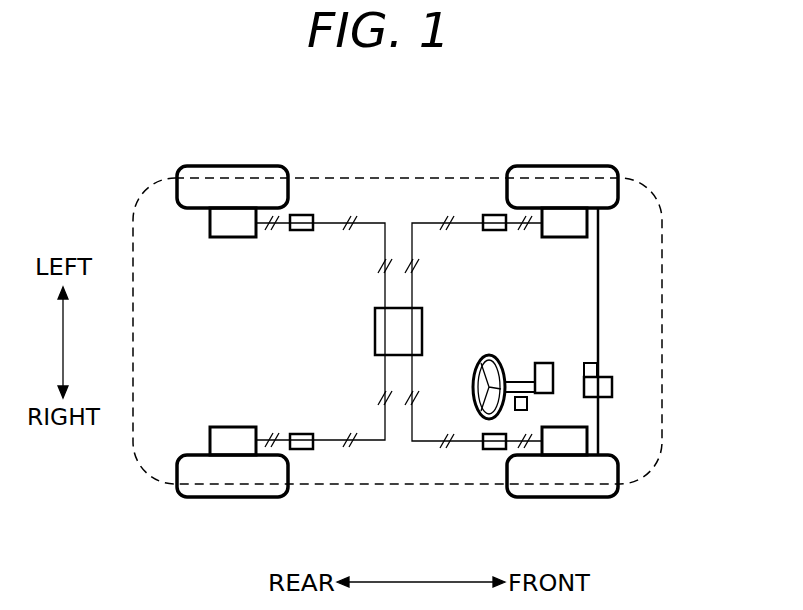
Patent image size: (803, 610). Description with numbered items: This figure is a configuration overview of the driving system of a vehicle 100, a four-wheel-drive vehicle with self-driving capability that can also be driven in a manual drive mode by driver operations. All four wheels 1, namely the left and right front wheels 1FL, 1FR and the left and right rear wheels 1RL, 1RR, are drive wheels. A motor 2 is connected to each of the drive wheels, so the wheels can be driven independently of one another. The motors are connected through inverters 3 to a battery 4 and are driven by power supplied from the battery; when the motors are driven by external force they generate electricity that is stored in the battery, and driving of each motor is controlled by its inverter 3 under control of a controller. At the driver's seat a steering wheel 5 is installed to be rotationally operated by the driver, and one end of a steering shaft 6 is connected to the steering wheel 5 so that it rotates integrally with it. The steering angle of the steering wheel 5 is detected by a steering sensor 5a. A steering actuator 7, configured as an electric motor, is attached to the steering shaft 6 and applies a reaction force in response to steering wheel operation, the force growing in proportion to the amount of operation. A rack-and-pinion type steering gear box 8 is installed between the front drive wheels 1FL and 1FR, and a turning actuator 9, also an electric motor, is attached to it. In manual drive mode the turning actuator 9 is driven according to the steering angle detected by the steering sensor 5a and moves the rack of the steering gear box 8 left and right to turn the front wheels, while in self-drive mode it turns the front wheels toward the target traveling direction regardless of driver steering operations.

The vehicle 100 is at (570, 92).
The wheels 1 is at (423, 336).
The left rear wheel 1RL is at (204, 166).
The left front wheel 1FL is at (582, 166).
The right rear wheel 1RR is at (208, 497).
The right front wheel 1FR is at (595, 497).
The motor 2 is at (210, 231).
The inverter 3 is at (303, 215).
The battery 4 is at (422, 322).
The steering wheel 5 is at (486, 356).
The steering sensor 5a is at (527, 404).
The steering shaft 6 is at (524, 382).
The steering actuator 7 is at (543, 363).
The steering gear box 8 is at (612, 388).
The turning actuator 9 is at (588, 363).